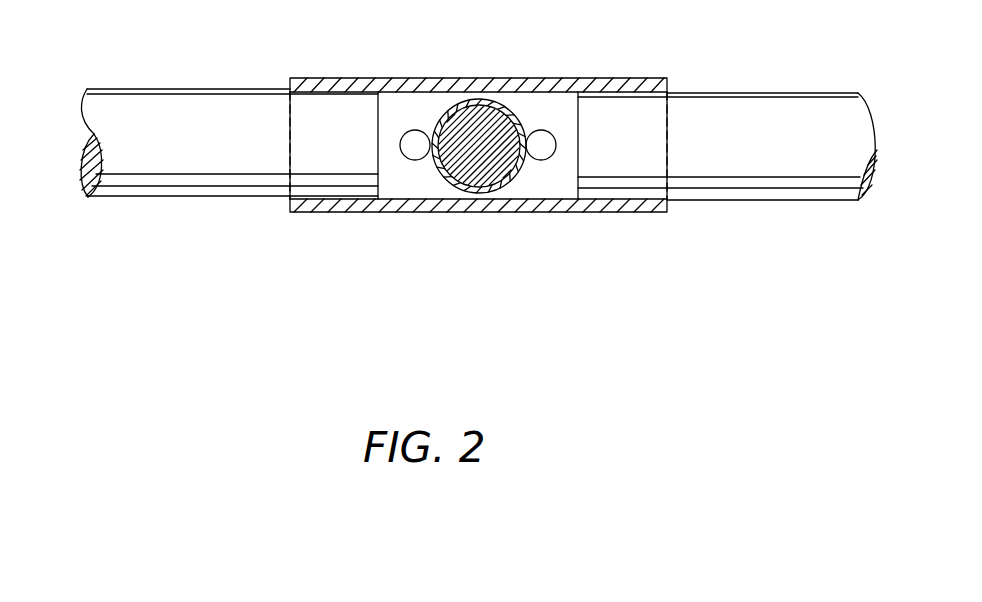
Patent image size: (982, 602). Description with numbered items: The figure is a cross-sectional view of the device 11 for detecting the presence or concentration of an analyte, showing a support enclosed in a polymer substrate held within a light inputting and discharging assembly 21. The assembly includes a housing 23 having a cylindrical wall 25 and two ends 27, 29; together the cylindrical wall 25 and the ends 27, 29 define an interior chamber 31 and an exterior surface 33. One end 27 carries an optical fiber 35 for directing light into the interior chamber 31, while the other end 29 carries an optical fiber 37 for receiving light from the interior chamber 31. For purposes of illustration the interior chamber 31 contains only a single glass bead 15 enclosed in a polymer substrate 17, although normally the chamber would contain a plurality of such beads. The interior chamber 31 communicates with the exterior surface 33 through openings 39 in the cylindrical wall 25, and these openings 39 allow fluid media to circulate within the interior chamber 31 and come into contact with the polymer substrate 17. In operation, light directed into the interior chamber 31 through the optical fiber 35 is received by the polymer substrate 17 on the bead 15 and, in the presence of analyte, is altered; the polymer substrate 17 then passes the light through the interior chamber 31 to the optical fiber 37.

The device for detecting the presence or concentration of an analyte 11 is at (479, 151).
The glass bead 15 is at (485, 112).
The polymer substrate 17 is at (495, 106).
The light inputting and discharging assembly 21 is at (479, 151).
The housing 23 is at (574, 213).
The cylindrical wall 25 is at (404, 80).
The end 27 is at (666, 80).
The end 29 is at (292, 80).
The interior chamber 31 is at (393, 188).
The exterior surface 33 is at (506, 214).
The optical fiber 35 is at (763, 183).
The optical fiber 37 is at (153, 187).
The openings 39 is at (428, 122).